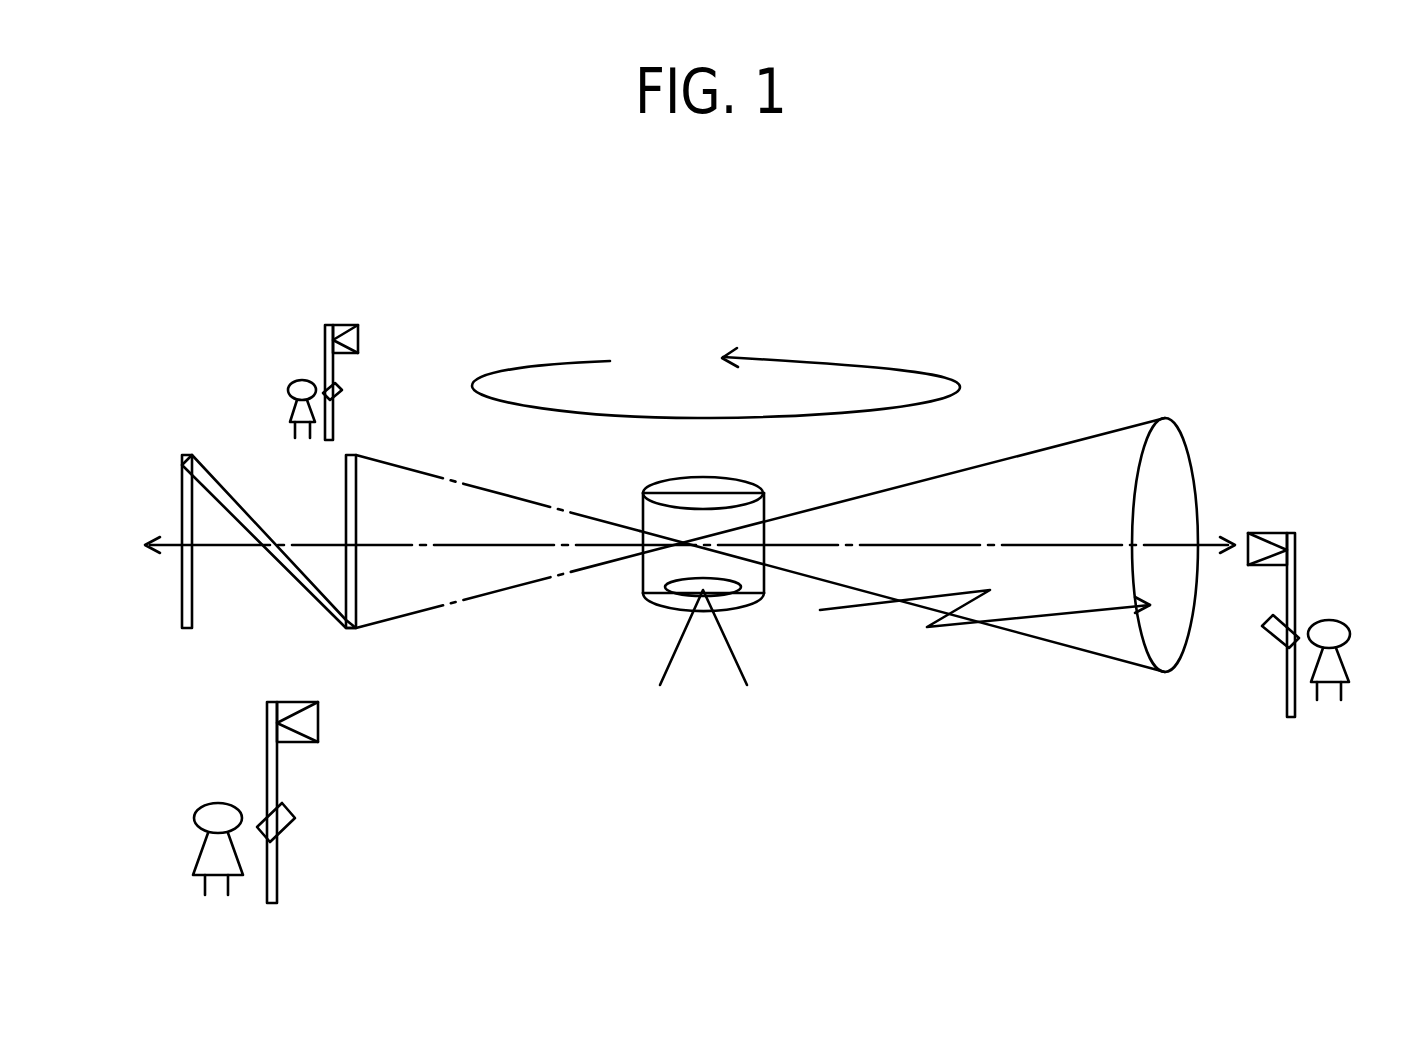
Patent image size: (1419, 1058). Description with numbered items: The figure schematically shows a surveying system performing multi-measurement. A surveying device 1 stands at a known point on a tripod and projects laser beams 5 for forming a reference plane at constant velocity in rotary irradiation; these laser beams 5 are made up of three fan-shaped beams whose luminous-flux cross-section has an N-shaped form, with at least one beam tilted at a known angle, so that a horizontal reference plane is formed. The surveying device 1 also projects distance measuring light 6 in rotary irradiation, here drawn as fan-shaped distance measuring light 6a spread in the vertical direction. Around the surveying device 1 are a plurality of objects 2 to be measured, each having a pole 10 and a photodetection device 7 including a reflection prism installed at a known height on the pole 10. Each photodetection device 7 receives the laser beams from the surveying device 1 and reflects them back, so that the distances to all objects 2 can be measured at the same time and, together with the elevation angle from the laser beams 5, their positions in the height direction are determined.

The surveying device 1 is at (757, 487).
The object to be measured 2 is at (283, 342).
The laser beams for forming reference plane 5 is at (497, 597).
The distance measuring light 6 is at (690, 455).
The fan-shaped distance measuring light 6a is at (1165, 545).
The photodetection device 7 is at (343, 393).
The pole 10 is at (333, 424).